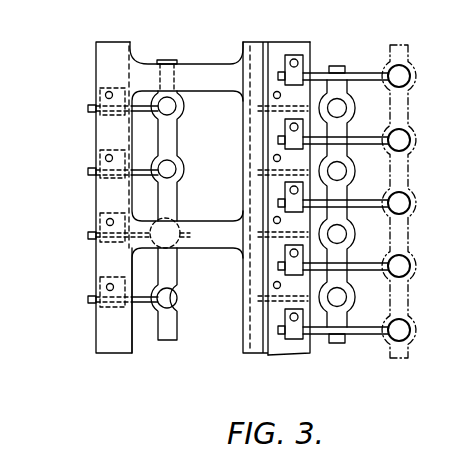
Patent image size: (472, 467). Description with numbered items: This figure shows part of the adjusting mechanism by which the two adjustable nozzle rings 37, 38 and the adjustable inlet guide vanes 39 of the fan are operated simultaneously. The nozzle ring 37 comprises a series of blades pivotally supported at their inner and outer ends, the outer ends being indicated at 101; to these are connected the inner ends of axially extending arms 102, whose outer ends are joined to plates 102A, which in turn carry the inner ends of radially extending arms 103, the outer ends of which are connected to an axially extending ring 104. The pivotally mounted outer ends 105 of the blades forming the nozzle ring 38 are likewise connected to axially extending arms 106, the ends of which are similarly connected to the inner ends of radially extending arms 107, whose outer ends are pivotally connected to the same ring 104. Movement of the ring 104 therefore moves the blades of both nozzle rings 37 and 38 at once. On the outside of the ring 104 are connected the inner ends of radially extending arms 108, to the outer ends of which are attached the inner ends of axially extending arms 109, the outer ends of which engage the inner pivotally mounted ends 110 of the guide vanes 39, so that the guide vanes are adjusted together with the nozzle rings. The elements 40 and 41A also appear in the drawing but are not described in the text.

The adjustable nozzle ring 37 is at (170, 161).
The adjustable nozzle ring 38 is at (344, 134).
The adjustable inlet guide vanes 39 is at (392, 168).
The lower block 40 is at (214, 244).
The bar 41A is at (286, 299).
The pivotally supported outer ends of blades 101 is at (168, 299).
The axially extending arms 102 is at (90, 299).
The plates 102A is at (100, 283).
The radially extending arms 103 is at (109, 223).
The axially extending ring 104 is at (140, 68).
The pivotally mounted outer ends of blades 105 is at (338, 107).
The axially extending arms 106 is at (298, 108).
The radially extending arms 107 is at (240, 166).
The radially extending arms 108 is at (296, 319).
The axially extending arms 109 is at (362, 336).
The inner pivotally mounted ends of guide vanes 110 is at (401, 329).